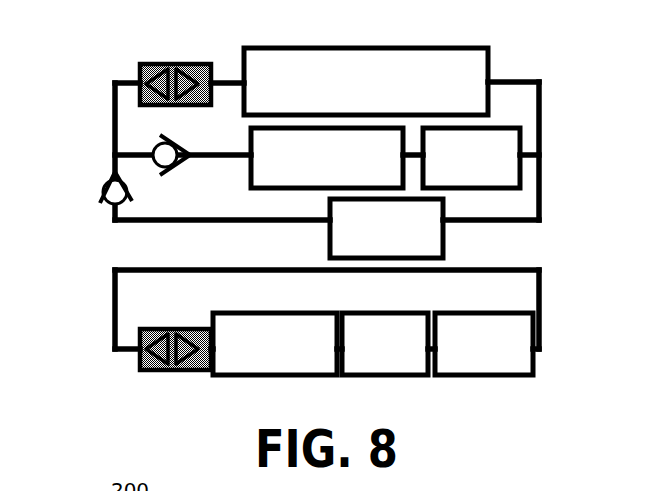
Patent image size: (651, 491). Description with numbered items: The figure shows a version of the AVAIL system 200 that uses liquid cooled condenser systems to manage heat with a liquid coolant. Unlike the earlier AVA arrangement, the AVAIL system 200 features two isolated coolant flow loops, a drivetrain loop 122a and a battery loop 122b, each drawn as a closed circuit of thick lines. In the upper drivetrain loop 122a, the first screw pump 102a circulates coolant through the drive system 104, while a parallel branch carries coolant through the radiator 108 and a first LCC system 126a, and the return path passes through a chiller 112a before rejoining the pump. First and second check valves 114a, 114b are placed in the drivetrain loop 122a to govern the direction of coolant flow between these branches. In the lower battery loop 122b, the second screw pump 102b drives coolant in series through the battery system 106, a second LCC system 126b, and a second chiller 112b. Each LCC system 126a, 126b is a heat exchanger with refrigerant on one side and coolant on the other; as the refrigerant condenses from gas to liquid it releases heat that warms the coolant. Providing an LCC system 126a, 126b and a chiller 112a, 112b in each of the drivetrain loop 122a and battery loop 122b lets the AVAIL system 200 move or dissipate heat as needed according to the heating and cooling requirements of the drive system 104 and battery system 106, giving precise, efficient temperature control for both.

The AVAIL system 200 is at (510, 25).
The first screw pump 102a is at (175, 71).
The second screw pump 102b is at (175, 366).
The drive system 104 is at (366, 81).
The battery system 106 is at (275, 344).
The radiator 108 is at (327, 158).
The chiller 112a is at (386, 228).
The chiller 112b is at (484, 344).
The first check valve 114a is at (150, 192).
The second check valve 114b is at (175, 143).
The drivetrain loop 122a is at (571, 50).
The battery loop 122b is at (571, 260).
The liquid cooled condenser system 126a is at (471, 158).
The liquid cooled condenser system 126b is at (385, 344).